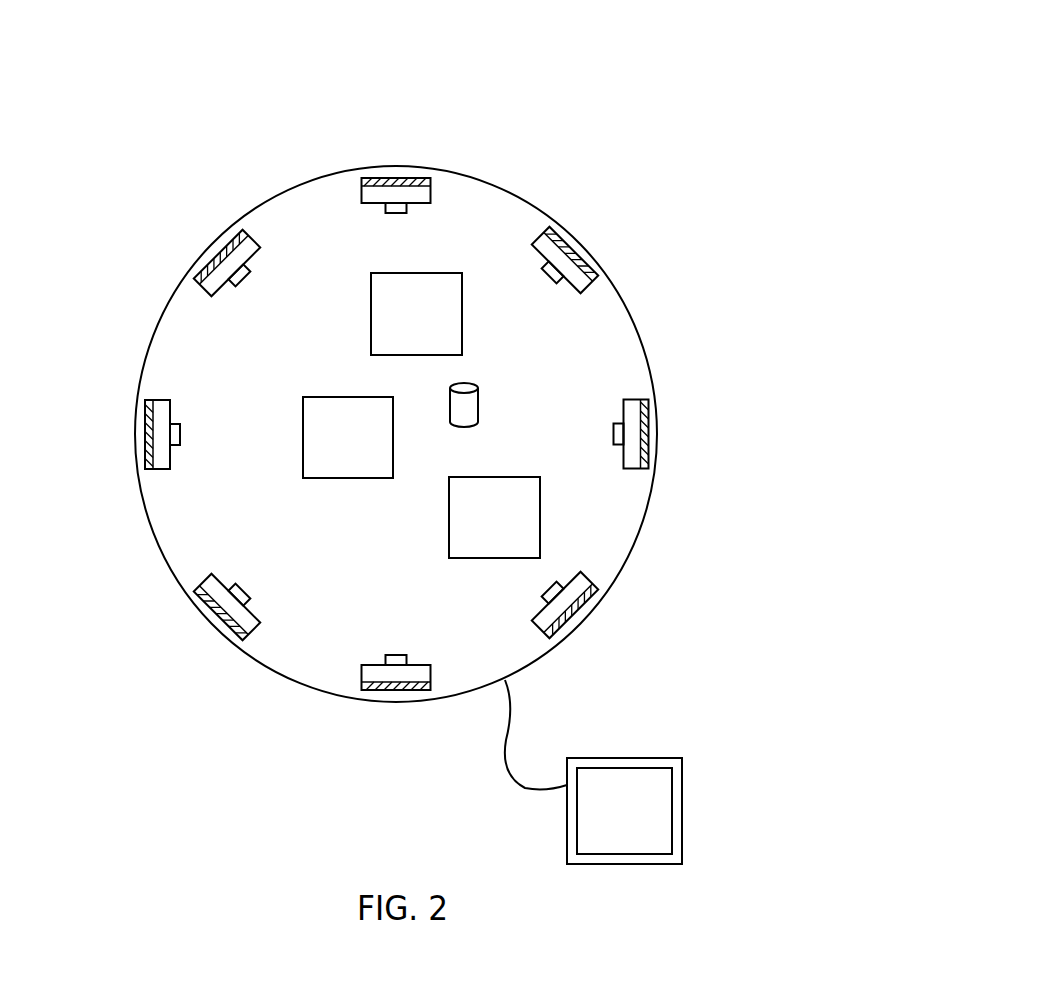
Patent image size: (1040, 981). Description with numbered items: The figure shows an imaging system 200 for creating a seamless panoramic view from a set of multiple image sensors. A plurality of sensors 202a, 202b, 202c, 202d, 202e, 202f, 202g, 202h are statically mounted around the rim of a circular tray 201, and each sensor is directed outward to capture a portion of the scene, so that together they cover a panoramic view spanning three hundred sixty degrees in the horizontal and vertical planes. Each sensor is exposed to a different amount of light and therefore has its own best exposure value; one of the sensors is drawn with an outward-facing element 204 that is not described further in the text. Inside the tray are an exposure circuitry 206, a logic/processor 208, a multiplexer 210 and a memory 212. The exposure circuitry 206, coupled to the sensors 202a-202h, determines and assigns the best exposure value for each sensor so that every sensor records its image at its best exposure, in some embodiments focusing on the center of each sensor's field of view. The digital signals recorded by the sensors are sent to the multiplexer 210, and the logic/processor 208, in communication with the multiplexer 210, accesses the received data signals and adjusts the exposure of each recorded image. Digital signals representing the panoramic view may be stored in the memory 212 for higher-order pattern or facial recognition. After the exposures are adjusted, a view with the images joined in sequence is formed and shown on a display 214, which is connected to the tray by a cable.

The imaging system 200 is at (883, 112).
The tray 201 is at (657, 423).
The sensor 202a is at (433, 190).
The sensor 202b is at (603, 295).
The sensor 202c is at (635, 478).
The sensor 202d is at (592, 612).
The sensor 202e is at (390, 700).
The sensor 202f is at (220, 630).
The sensor 202g is at (138, 455).
The sensor 202h is at (210, 247).
The sensing surface 204 is at (573, 248).
The exposure circuitry 206 is at (437, 312).
The logic/processor 208 is at (368, 433).
The multiplexer 210 is at (515, 514).
The memory 212 is at (478, 393).
The display 214 is at (682, 792).